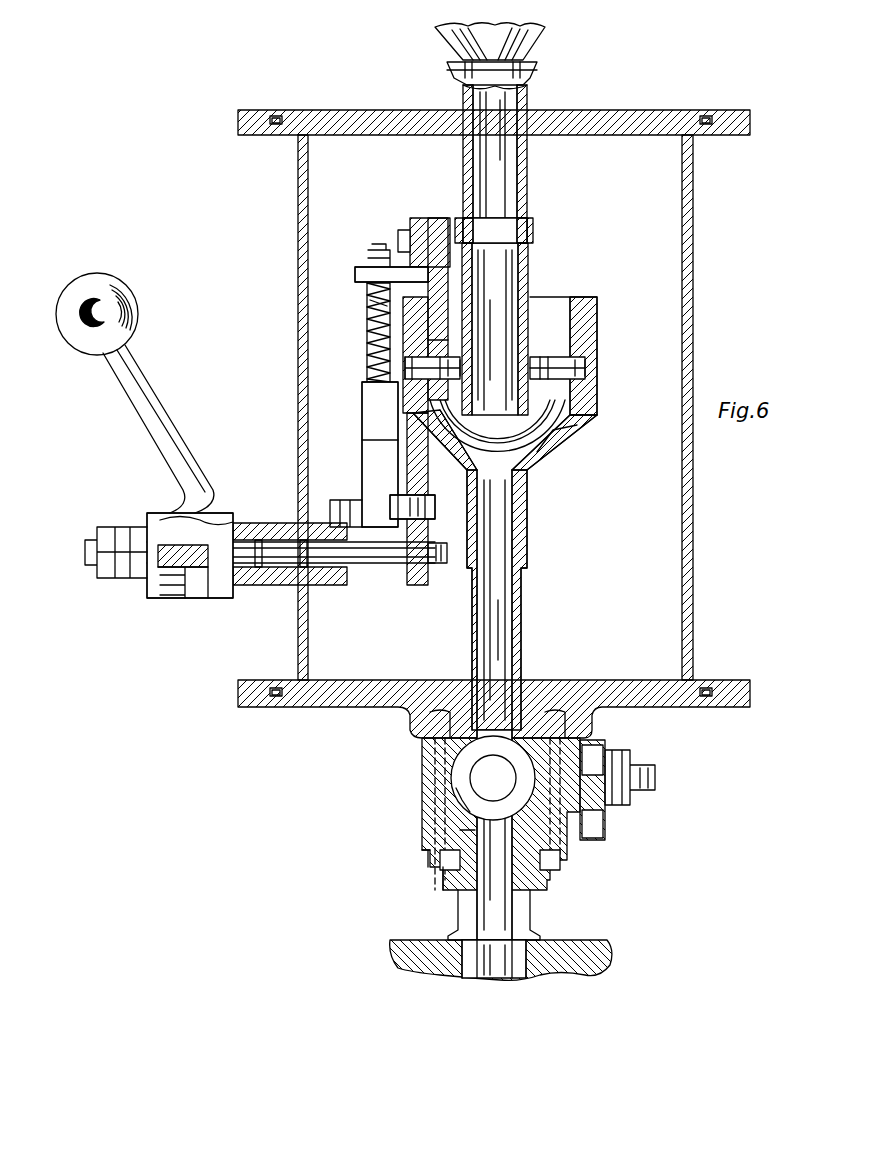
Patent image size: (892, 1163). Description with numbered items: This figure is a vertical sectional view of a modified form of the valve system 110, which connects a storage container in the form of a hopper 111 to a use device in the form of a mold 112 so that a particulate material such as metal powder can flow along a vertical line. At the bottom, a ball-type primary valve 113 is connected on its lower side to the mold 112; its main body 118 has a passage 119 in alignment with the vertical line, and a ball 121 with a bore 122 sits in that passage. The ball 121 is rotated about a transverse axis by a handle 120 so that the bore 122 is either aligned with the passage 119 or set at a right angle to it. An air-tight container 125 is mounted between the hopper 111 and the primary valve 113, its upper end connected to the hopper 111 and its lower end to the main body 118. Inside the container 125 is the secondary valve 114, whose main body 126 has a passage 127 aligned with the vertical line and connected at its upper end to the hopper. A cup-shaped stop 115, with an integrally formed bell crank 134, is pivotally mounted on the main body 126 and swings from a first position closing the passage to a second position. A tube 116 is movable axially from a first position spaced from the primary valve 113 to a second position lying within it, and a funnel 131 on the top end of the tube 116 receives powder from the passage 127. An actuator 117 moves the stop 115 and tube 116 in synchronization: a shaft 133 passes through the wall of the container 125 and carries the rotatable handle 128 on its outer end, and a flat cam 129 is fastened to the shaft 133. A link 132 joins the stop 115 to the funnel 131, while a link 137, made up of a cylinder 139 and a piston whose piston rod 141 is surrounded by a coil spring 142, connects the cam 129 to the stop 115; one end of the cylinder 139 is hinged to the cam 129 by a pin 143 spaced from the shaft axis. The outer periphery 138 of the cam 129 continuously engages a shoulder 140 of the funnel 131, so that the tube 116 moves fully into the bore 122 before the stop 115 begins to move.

The valve system 110 is at (652, 103).
The hopper 111 is at (538, 42).
The mold 112 is at (558, 960).
The primary valve 113 is at (437, 864).
The secondary valve 114 is at (520, 300).
The stop 115 is at (552, 438).
The tube 116 is at (522, 600).
The actuator 117 is at (362, 440).
The main body 118 is at (440, 758).
The passage 119 is at (470, 834).
The handle 120 is at (604, 822).
The ball 121 is at (452, 790).
The bore 122 is at (497, 756).
The air-tight container 125 is at (693, 280).
The main body 126 is at (530, 342).
The passage 127 is at (512, 328).
The rotatable handle 128 is at (165, 400).
The cam 129 is at (428, 525).
The funnel 131 is at (540, 460).
The link 132 is at (362, 268).
The shaft 133 is at (277, 563).
The bell crank 134 is at (440, 342).
The link 137 is at (362, 468).
The outer periphery 138 is at (418, 590).
The cylinder 139 is at (362, 409).
The shoulder 140 is at (580, 410).
The piston rod 141 is at (365, 306).
The coil spring 142 is at (368, 334).
The pin 143 is at (438, 505).